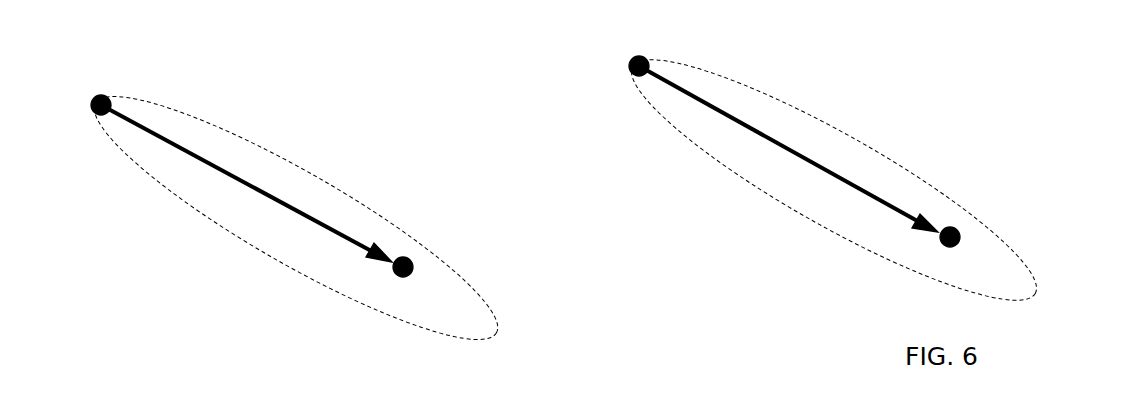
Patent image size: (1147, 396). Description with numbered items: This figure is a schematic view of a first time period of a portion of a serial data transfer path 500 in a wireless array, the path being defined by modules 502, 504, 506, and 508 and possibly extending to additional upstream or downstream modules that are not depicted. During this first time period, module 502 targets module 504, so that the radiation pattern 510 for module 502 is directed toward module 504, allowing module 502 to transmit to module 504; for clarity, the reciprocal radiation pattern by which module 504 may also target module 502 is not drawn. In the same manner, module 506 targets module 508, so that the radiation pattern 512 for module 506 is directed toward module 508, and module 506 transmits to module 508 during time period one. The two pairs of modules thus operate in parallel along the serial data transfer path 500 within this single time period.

The serial data transfer path 500 is at (1040, 143).
The module 502 is at (113, 100).
The module 504 is at (413, 258).
The module 506 is at (637, 76).
The module 508 is at (945, 245).
The radiation pattern 510 is at (248, 143).
The radiation pattern 512 is at (805, 118).